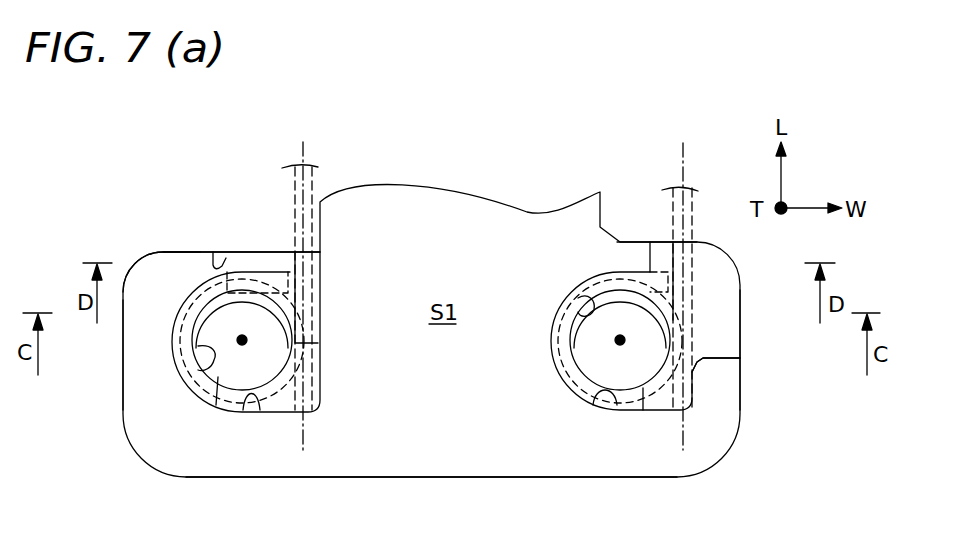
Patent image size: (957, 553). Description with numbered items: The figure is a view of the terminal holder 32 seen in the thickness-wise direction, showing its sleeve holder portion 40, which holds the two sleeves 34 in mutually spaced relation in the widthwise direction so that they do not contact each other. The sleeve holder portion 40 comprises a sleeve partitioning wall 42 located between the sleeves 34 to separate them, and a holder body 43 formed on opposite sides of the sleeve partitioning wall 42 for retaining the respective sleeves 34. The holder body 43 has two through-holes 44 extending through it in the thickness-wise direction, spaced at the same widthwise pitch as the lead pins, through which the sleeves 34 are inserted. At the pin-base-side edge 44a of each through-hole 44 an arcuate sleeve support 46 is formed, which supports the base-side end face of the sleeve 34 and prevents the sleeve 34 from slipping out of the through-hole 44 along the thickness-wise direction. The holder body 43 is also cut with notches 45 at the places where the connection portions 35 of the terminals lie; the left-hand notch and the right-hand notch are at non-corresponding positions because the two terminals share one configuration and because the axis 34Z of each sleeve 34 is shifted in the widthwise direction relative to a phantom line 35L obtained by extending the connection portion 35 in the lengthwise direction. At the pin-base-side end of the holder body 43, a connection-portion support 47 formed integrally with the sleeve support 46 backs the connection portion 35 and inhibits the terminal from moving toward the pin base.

The terminal holder 32 is at (141, 238).
The sleeve 34 is at (245, 250).
The axis of the sleeve 34Z is at (242, 340).
The connection portion 35 is at (293, 182).
The phantom line 35L is at (303, 145).
The sleeve holder portion 40 is at (394, 450).
The sleeve partitioning wall 42 is at (472, 428).
The holder body 43 is at (140, 344).
The through-hole 44 is at (250, 392).
The pin-base-side edge 44a is at (220, 346).
The notch 45 is at (223, 250).
The sleeve support 46 is at (207, 308).
The connection-portion support 47 is at (268, 252).